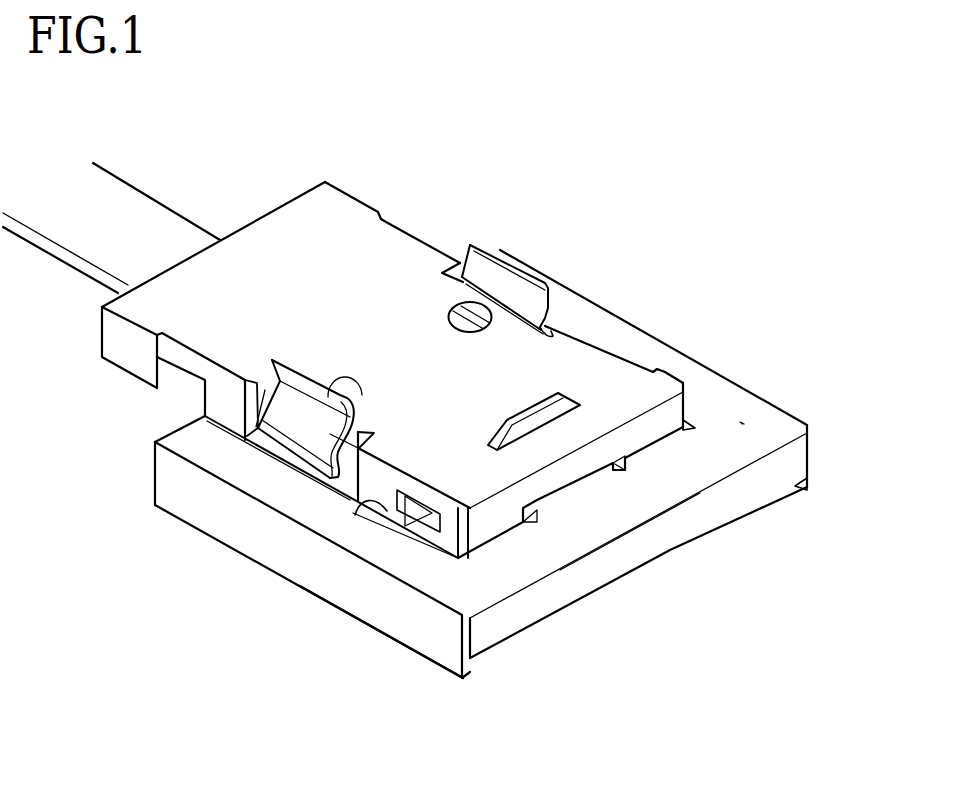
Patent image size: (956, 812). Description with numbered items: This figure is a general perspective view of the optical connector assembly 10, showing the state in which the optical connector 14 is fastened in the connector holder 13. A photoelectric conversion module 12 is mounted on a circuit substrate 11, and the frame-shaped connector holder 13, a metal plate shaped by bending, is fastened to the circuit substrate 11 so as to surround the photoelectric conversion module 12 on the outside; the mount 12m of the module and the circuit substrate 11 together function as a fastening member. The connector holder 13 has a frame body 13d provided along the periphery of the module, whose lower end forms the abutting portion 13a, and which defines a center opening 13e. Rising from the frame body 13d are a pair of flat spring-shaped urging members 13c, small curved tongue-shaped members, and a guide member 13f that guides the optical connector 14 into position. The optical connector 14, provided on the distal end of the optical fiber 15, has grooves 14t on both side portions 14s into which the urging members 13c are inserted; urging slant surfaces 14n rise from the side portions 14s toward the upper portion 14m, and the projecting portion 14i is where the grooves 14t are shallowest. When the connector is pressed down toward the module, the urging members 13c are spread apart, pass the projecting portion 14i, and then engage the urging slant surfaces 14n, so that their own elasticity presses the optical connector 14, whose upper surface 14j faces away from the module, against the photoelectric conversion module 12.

The optical connector assembly 10 is at (361, 199).
The circuit substrate 11 is at (792, 645).
The photoelectric conversion module 12 is at (742, 423).
The mount 12m is at (742, 423).
The connector holder 13 is at (215, 544).
The abutting portion 13a is at (413, 652).
The urging members 13c is at (482, 244).
The frame body 13d is at (625, 563).
The center opening 13e is at (353, 513).
The guide member 13f is at (533, 397).
The optical connector 14 is at (628, 357).
The projecting portion 14i is at (340, 465).
The upper surface 14j is at (605, 410).
The upper portion 14m is at (570, 290).
The urging slant surfaces 14n is at (263, 388).
The side portions 14s is at (220, 397).
The grooves 14t is at (373, 433).
The optical fiber 15 is at (150, 197).